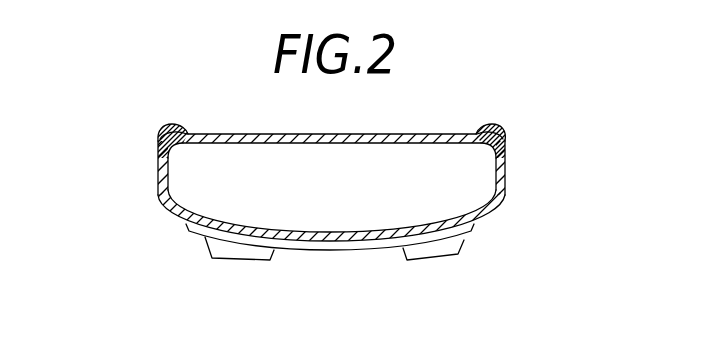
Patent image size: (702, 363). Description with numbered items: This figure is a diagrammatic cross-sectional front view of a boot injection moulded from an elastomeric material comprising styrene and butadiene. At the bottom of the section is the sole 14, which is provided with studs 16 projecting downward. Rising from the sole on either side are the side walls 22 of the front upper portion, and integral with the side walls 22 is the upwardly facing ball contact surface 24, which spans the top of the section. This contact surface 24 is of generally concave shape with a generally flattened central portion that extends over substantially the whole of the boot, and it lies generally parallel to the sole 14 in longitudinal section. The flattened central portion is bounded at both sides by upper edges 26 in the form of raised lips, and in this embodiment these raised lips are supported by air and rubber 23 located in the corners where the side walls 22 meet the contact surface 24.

The sole 14 is at (185, 229).
The studs 16 is at (403, 252).
The side walls 22 is at (160, 185).
The rubber 23 is at (160, 146).
The ball contact surface 24 is at (276, 135).
The upper edges 26 is at (164, 125).